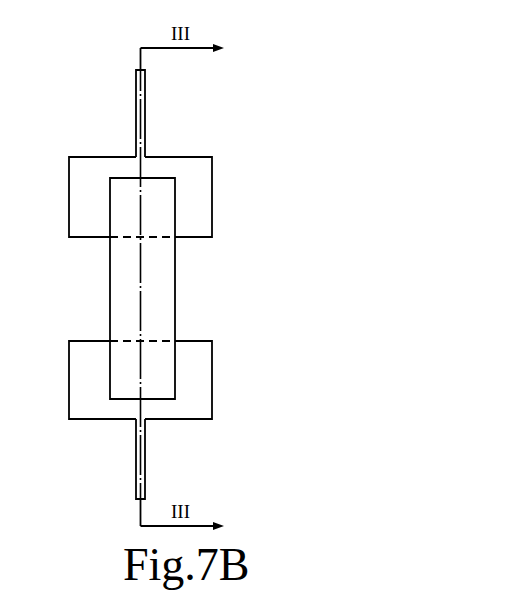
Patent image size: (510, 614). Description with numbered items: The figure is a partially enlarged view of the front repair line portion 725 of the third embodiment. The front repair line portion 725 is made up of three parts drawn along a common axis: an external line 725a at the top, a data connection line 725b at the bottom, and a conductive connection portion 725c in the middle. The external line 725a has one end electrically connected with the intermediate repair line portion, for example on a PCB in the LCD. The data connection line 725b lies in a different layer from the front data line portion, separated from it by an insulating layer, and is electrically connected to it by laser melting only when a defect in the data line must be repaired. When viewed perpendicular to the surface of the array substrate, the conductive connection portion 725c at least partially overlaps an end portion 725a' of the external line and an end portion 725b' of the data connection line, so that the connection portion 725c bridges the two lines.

The front repair line portion 725 is at (332, 60).
The external line 725a is at (236, 113).
The end portion of the external line 725a' is at (204, 197).
The conductive connection portion 725c is at (157, 286).
The end portion of the data connection line 725b' is at (201, 380).
The data connection line 725b is at (234, 459).